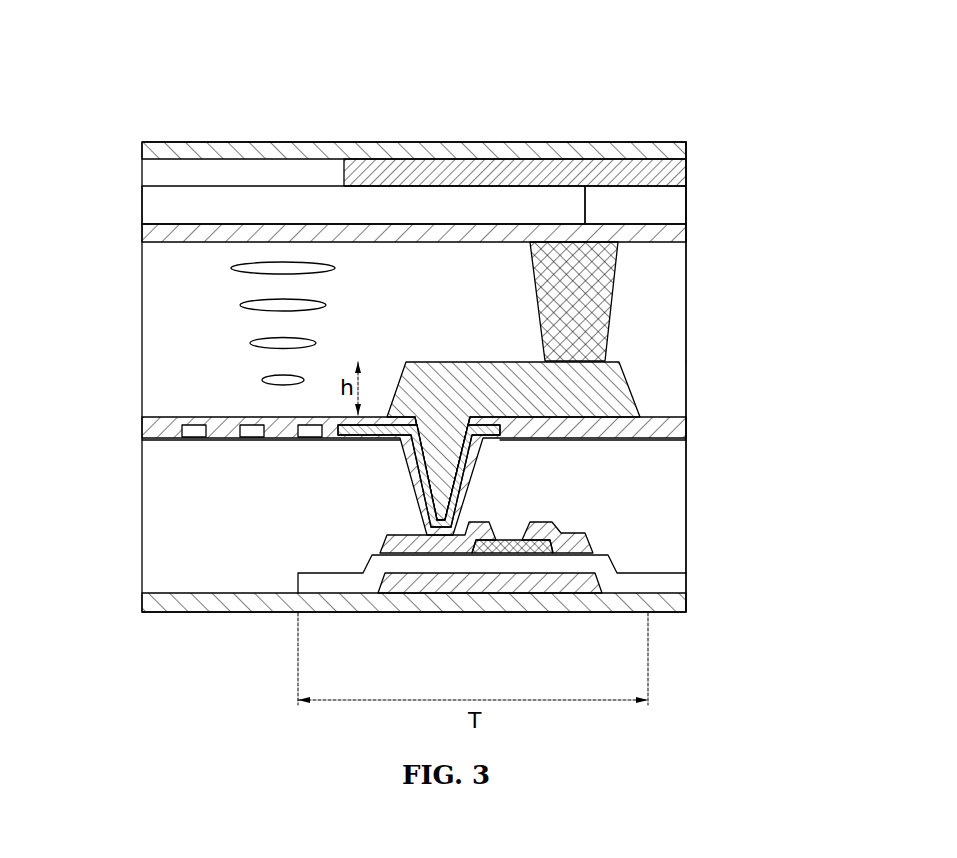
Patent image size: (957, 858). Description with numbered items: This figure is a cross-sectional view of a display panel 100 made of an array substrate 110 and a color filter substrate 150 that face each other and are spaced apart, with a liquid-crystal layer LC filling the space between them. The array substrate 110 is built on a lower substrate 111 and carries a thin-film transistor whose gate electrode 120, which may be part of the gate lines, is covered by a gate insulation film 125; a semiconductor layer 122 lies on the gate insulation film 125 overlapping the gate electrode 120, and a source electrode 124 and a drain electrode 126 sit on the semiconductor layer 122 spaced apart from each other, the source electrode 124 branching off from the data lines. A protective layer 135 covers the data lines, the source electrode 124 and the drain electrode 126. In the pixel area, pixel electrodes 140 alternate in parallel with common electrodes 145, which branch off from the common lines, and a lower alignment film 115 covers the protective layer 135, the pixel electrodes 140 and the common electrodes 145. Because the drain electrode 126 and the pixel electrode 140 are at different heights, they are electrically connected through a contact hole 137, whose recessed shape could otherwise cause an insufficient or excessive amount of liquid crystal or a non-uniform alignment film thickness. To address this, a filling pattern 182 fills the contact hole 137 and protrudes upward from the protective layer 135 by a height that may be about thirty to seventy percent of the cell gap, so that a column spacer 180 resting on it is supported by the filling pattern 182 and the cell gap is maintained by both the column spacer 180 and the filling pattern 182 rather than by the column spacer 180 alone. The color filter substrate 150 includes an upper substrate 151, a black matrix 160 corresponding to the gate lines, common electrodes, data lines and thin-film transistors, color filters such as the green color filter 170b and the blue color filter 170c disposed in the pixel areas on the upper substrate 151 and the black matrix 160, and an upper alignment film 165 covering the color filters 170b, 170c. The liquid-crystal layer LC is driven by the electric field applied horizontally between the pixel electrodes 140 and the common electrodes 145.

The display panel 100 is at (574, 97).
The array substrate 110 is at (358, 362).
The lower substrate 111 is at (142, 603).
The lower alignment film 115 is at (686, 431).
The gate electrode 120 is at (569, 560).
The semiconductor layer 122 is at (512, 540).
The source electrode 124 is at (583, 580).
The gate insulation film 125 is at (640, 580).
The drain electrode 126 is at (425, 545).
The protective layer 135 is at (670, 522).
The contact hole 137 is at (433, 438).
The pixel electrode 140 is at (252, 440).
The common electrode 145 is at (188, 440).
The color filter substrate 150 is at (688, 142).
The upper substrate 151 is at (140, 152).
The black matrix 160 is at (686, 174).
The upper alignment film 165 is at (686, 236).
The green color filter 170b is at (140, 205).
The blue color filter 170c is at (686, 207).
The column spacer 180 is at (600, 298).
The filling pattern 182 is at (640, 396).
The liquid-crystal layer LC is at (142, 346).